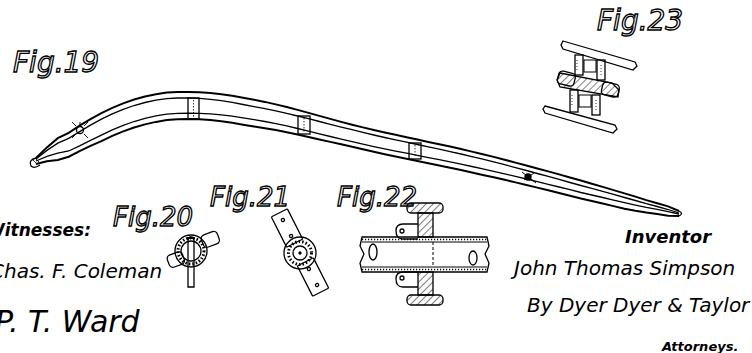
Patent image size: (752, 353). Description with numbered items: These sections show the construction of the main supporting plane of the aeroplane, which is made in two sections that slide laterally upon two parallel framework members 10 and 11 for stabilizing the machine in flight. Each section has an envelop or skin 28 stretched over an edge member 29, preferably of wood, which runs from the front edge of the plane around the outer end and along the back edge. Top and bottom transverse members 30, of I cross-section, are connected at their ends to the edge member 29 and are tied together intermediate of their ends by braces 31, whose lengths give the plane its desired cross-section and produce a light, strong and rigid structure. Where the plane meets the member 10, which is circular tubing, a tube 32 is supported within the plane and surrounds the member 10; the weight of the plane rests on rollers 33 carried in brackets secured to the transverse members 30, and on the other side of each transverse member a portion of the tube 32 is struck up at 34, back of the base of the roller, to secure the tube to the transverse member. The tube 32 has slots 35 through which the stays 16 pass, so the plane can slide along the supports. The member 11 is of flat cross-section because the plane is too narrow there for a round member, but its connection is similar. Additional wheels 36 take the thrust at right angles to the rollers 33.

In FIG. 19, the plane support member 10 is at (82, 135).
In FIG. 20, the plane support member 10 is at (212, 258).
In FIG. 21, the plane support member 10 is at (312, 242).
In FIG. 22, the plane support member 10 is at (462, 250).
In FIG. 19, the plane support member 11 is at (535, 175).
In FIG. 23, the plane support member 11 is at (610, 82).
In FIG. 20, the wires or filamentous members 16 is at (197, 276).
In FIG. 19, the envelop or skin 28 is at (404, 137).
In FIG. 19, the edge member 29 is at (37, 166).
In FIG. 19, the transverse members 30 is at (337, 120).
In FIG. 23, the transverse members 30 is at (615, 58).
In FIG. 22, the transverse members 30 is at (432, 208).
In FIG. 19, the braces 31 is at (192, 119).
In FIG. 20, the tube 32 is at (180, 242).
In FIG. 21, the tube 32 is at (292, 266).
In FIG. 22, the tube 32 is at (472, 238).
In FIG. 21, the rollers 33 is at (287, 238).
In FIG. 22, the rollers 33 is at (402, 228).
In FIG. 22, the struck-up portion of tube 34 is at (436, 232).
In FIG. 20, the slots 35 is at (190, 268).
In FIG. 23, the additional wheels 36 is at (562, 79).
In FIG. 20, the additional wheels 36 is at (213, 242).